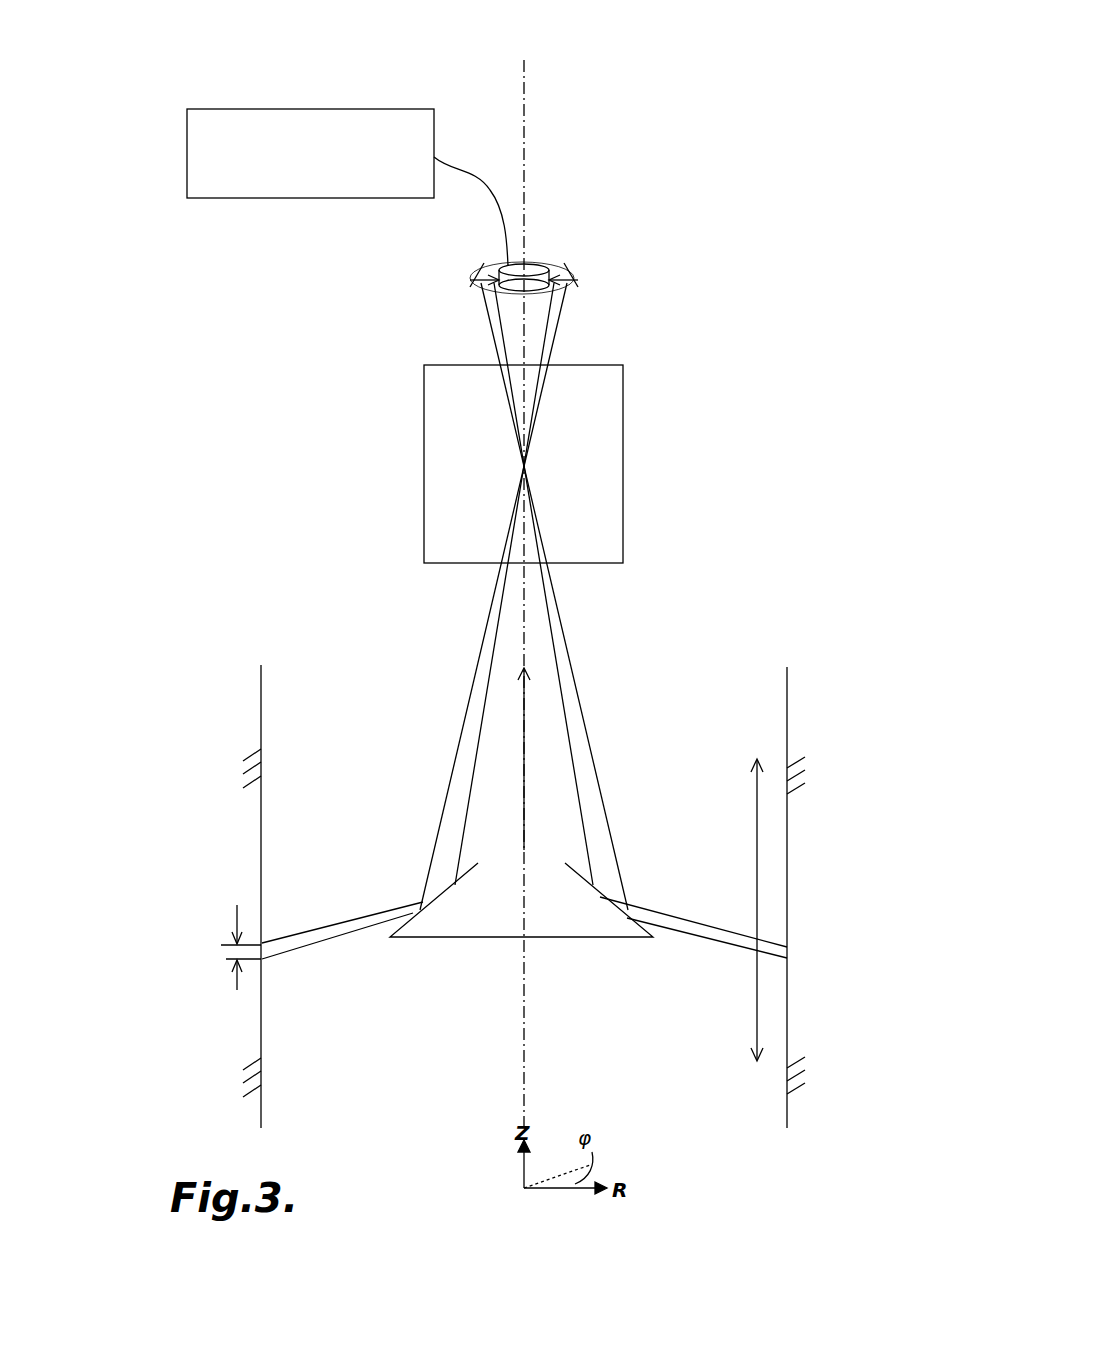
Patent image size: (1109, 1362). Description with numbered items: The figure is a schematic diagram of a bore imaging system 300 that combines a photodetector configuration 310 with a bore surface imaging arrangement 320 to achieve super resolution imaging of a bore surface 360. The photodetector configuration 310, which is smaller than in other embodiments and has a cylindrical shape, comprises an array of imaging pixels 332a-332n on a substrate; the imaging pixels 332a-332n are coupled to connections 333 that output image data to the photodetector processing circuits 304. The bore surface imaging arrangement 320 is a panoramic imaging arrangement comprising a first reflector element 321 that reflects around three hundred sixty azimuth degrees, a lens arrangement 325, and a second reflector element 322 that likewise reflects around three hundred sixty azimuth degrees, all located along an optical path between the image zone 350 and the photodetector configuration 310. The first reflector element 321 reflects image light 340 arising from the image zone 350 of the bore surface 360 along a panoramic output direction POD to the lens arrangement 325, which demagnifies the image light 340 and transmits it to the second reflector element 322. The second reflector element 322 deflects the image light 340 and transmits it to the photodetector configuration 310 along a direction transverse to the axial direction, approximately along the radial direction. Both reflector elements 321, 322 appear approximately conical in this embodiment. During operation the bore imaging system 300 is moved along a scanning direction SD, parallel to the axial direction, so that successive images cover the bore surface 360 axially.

The bore imaging system 300 is at (690, 68).
The photodetector processing circuits 304 is at (187, 150).
The photodetector configuration 310 is at (587, 229).
The connections 333 is at (457, 175).
The imaging pixels 332a-332n is at (620, 214).
The second reflector element 322 is at (575, 283).
The image light 340 is at (565, 292).
The lens arrangement 325 is at (424, 433).
The bore surface imaging arrangement 320 is at (656, 277).
The first reflector element 321 is at (563, 863).
The bore surface 360 is at (263, 716).
The image zone 350 is at (221, 942).
The panoramic output direction POD is at (525, 712).
The scanning direction SD is at (765, 935).